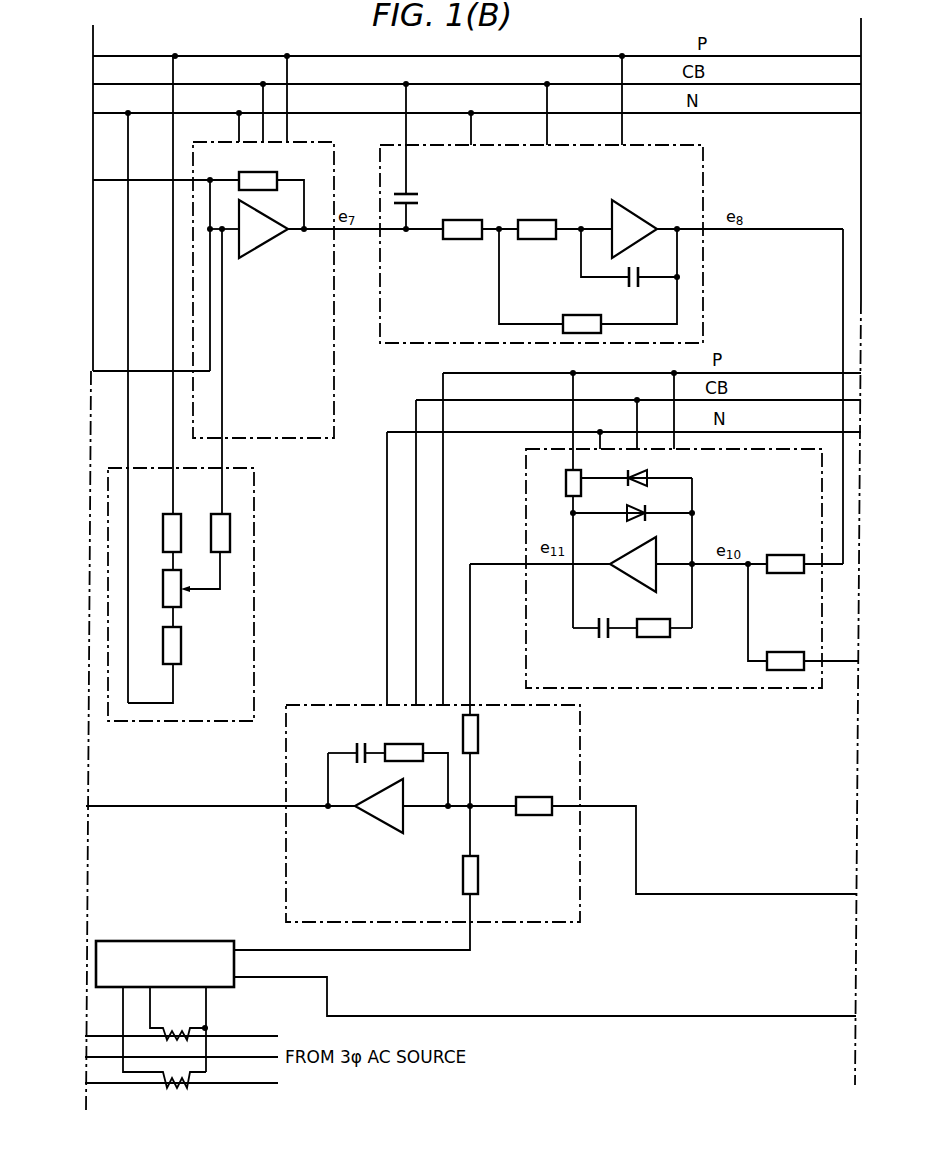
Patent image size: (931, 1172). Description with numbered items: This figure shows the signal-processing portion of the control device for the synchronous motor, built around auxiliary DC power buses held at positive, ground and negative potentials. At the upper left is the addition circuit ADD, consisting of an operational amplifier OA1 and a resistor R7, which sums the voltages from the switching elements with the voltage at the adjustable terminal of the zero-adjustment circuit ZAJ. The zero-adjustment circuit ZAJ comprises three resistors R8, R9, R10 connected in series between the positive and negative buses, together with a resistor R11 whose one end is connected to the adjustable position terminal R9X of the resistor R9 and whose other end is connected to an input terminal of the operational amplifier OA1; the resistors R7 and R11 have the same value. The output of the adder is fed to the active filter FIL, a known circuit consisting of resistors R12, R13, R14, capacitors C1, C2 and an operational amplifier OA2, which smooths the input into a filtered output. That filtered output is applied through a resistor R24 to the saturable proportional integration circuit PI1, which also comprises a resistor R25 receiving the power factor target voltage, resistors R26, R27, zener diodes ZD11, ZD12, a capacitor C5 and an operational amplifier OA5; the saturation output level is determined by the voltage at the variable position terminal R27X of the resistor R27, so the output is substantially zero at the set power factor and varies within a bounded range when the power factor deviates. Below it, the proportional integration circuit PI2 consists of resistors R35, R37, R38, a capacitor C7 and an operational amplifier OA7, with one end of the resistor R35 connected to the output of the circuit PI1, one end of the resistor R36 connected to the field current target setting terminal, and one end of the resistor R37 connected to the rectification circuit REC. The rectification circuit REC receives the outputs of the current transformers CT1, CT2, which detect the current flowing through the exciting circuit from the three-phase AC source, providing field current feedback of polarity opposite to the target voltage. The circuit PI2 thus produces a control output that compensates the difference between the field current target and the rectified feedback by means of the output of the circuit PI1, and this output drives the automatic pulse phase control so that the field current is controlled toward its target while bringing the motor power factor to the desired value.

The addition circuit ADD is at (296, 425).
The resistor R7 is at (271, 189).
The operational amplifier OA1 is at (266, 234).
The active filter FIL is at (662, 179).
The capacitor C1 is at (416, 156).
The resistor R12 is at (464, 220).
The resistor R13 is at (538, 220).
The operational amplifier OA2 is at (638, 227).
The resistor R14 is at (583, 314).
The capacitor C2 is at (629, 270).
The zero-adjustment circuit ZAJ is at (228, 708).
The resistor R8 is at (163, 543).
The resistor R9 is at (163, 603).
The resistor R10 is at (163, 652).
The resistor R11 is at (230, 528).
The adjustable position terminal R9X is at (206, 592).
The saturable proportional integration circuit PI1 is at (574, 682).
The resistor R27 is at (566, 487).
The variable position terminal R27X is at (604, 465).
The zener diode ZD11 is at (646, 471).
The zener diode ZD12 is at (644, 507).
The operational amplifier OA5 is at (625, 571).
The resistor R24 is at (785, 554).
The resistor R25 is at (785, 652).
The capacitor C5 is at (605, 642).
The resistor R26 is at (659, 638).
The proportional integration circuit PI2 is at (366, 912).
The capacitor C7 is at (356, 743).
The resistor R38 is at (404, 744).
The operational amplifier OA7 is at (374, 813).
The resistor R35 is at (478, 743).
The resistor R36 is at (535, 816).
The resistor R37 is at (478, 862).
The rectification circuit REC is at (165, 964).
The current transformer CT1 is at (176, 1088).
The current transformer CT2 is at (173, 1028).